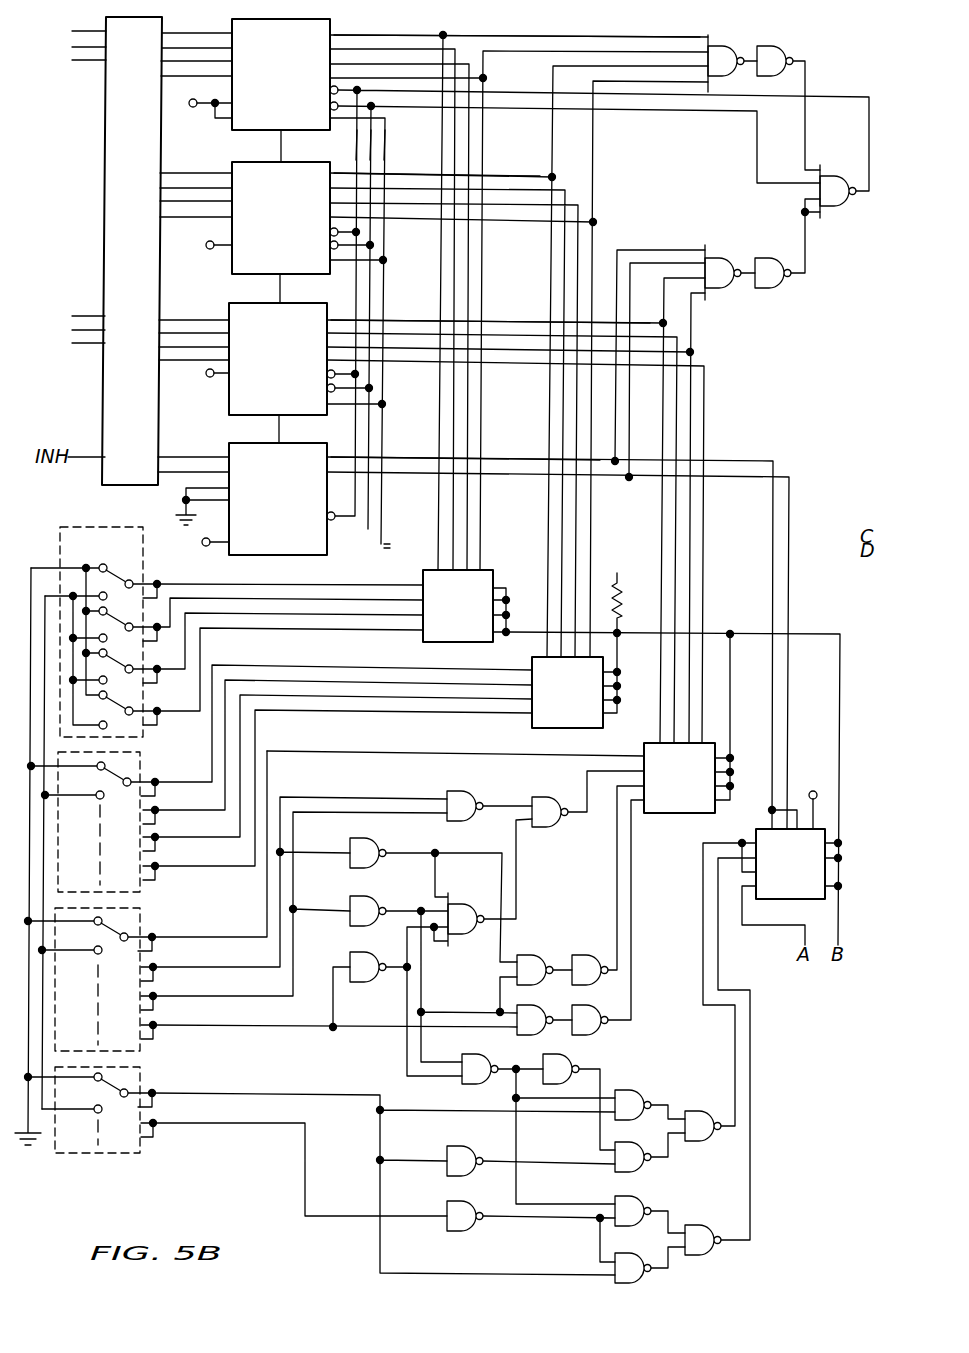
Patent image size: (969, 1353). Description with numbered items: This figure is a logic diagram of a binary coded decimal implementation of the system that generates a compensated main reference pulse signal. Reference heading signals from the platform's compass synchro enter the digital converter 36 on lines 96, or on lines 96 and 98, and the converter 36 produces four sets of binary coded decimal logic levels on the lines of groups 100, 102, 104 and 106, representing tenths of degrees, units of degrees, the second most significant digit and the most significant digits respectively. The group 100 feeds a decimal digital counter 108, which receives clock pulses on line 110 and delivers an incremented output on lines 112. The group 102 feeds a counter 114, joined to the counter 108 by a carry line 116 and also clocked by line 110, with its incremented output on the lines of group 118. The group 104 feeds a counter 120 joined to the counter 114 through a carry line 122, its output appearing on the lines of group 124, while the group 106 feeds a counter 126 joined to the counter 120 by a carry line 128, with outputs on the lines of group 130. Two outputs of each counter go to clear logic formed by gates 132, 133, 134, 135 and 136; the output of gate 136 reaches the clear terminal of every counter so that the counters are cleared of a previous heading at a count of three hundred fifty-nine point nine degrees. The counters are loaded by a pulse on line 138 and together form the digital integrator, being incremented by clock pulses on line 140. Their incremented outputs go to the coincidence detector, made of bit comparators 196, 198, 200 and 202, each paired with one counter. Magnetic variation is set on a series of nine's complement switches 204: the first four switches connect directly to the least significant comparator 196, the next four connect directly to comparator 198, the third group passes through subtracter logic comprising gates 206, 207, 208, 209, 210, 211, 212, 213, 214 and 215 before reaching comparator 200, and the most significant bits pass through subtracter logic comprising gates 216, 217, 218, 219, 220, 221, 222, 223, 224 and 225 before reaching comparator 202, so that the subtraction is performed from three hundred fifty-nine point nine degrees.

The digital converter 36 is at (143, 155).
The lines 96 is at (89, 33).
The lines 98 is at (88, 315).
The group of lines 100 is at (196, 39).
The group of lines 102 is at (196, 179).
The group of lines 104 is at (194, 322).
The group of lines 106 is at (193, 451).
The decimal digital counter 108 is at (300, 87).
The clock pulse line 110 is at (357, 155).
The lines 112 is at (517, 41).
The counter 114 is at (300, 229).
The carry line 116 is at (283, 147).
The group of lines 118 is at (437, 184).
The counter 120 is at (298, 371).
The carry line 122 is at (282, 289).
The group of lines 124 is at (490, 326).
The counter 126 is at (300, 511).
The carry line 128 is at (306, 429).
The group of lines 130 is at (465, 454).
The gate 132 is at (722, 46).
The gate 133 is at (785, 46).
The gate 134 is at (720, 258).
The gate 135 is at (765, 258).
The gate 136 is at (833, 177).
The line 138 is at (819, 535).
The line 140 is at (824, 550).
The bit comparator 196 is at (475, 617).
The bit comparator 198 is at (582, 704).
The bit comparator 200 is at (694, 790).
The bit comparator 202 is at (806, 876).
The nine's complement switches 204 is at (51, 553).
The gate 206 is at (470, 784).
The gate 207 is at (544, 797).
The gate 208 is at (345, 843).
The gate 209 is at (345, 901).
The gate 210 is at (345, 957).
The gate 211 is at (463, 903).
The gate 212 is at (540, 949).
The gate 213 is at (520, 1034).
The gate 214 is at (590, 949).
The gate 215 is at (604, 1033).
The gate 216 is at (468, 1083).
The gate 217 is at (570, 1056).
The gate 218 is at (452, 1147).
The gate 219 is at (447, 1203).
The gate 220 is at (634, 1093).
The gate 221 is at (632, 1173).
The gate 222 is at (616, 1197).
The gate 223 is at (620, 1285).
The gate 224 is at (696, 1142).
The gate 225 is at (704, 1256).